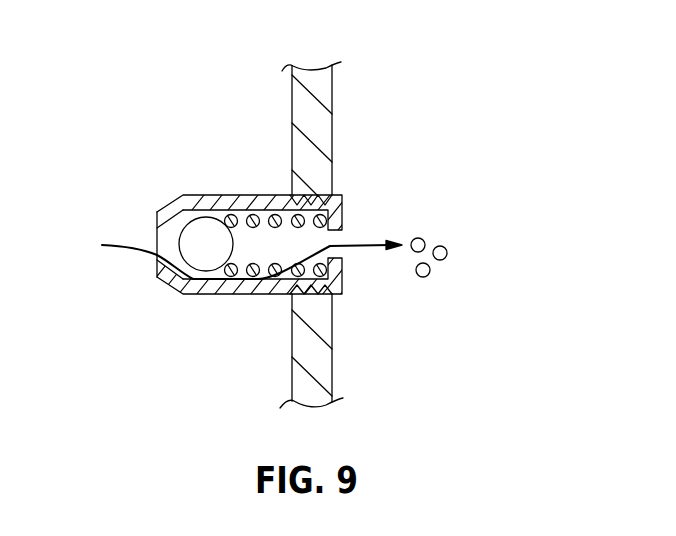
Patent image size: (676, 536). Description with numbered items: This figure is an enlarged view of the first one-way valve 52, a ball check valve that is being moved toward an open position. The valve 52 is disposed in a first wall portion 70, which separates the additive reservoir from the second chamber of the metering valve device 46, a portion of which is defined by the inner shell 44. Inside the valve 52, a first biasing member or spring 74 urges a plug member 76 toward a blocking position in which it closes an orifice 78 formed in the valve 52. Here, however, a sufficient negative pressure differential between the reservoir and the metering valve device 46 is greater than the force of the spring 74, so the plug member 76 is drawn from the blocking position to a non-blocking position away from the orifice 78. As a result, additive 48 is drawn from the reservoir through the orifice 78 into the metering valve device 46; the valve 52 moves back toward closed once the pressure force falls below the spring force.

The inner shell 44 is at (276, 80).
The metering valve device 46 is at (292, 113).
The additive 48 is at (418, 237).
The first one-way valve 52 is at (230, 214).
The first wall portion 70 is at (292, 160).
The first biasing member or spring 74 is at (277, 213).
The plug member 76 is at (185, 211).
The orifice 78 is at (180, 216).